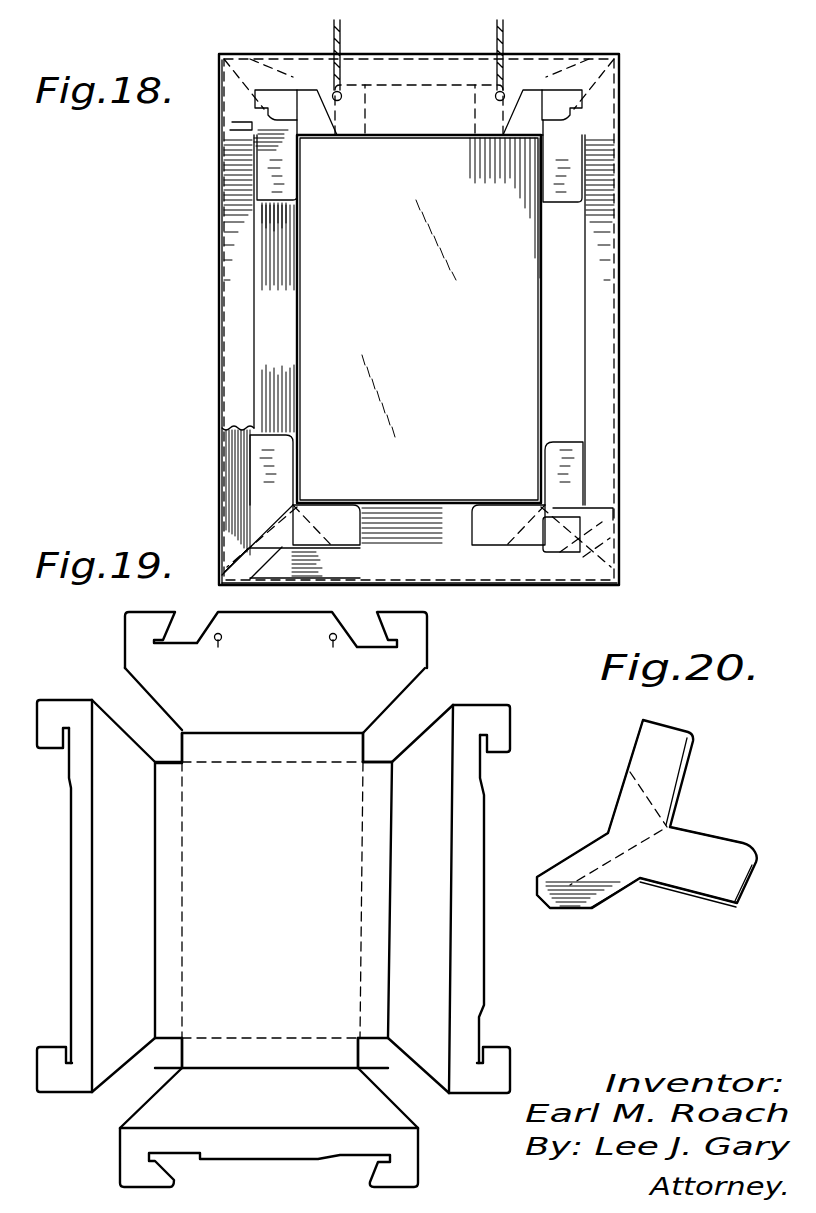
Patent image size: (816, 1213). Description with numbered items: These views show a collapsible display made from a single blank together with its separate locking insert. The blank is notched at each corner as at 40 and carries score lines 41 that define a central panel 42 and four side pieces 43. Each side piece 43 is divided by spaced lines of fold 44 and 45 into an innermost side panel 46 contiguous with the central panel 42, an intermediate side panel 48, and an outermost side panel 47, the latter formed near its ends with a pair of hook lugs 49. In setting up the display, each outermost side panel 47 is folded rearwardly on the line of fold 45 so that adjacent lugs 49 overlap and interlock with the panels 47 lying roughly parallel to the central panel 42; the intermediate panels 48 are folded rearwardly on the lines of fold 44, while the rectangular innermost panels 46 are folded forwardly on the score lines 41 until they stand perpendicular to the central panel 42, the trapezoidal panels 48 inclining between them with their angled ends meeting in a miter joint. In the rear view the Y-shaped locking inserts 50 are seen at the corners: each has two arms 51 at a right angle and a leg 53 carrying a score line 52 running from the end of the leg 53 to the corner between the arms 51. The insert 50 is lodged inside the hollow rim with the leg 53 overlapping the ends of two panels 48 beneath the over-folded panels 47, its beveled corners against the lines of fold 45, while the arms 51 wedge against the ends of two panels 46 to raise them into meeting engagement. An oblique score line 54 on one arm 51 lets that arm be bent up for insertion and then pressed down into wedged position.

In FIG. 19, the corner notch 40 is at (416, 714).
In FIG. 18, the score line 41 is at (298, 272).
In FIG. 19, the score line 41 is at (274, 763).
In FIG. 18, the central panel 42 is at (463, 329).
In FIG. 19, the central panel 42 is at (290, 894).
In FIG. 19, the side piece 43 is at (490, 856).
In FIG. 19, the line of fold 44 is at (294, 736).
In FIG. 18, the line of fold 45 is at (308, 578).
In FIG. 19, the line of fold 45 is at (490, 940).
In FIG. 19, the innermost side panel 46 is at (198, 742).
In FIG. 18, the outermost side panel 47 is at (418, 78).
In FIG. 19, the outermost side panel 47 is at (470, 970).
In FIG. 18, the intermediate side panel 48 is at (290, 328).
In FIG. 19, the intermediate side panel 48 is at (128, 730).
In FIG. 18, the hook lug 49 is at (256, 132).
In FIG. 19, the hook lug 49 is at (130, 627).
In FIG. 20, the Y-shaped locking insert 50 is at (664, 892).
In FIG. 18, the arm 51 is at (288, 177).
In FIG. 20, the arm 51 is at (675, 741).
In FIG. 18, the score line 52 is at (266, 524).
In FIG. 20, the score line 52 is at (602, 868).
In FIG. 18, the leg 53 is at (276, 544).
In FIG. 20, the leg 53 is at (620, 878).
In FIG. 18, the score line 54 is at (314, 510).
In FIG. 20, the score line 54 is at (647, 793).